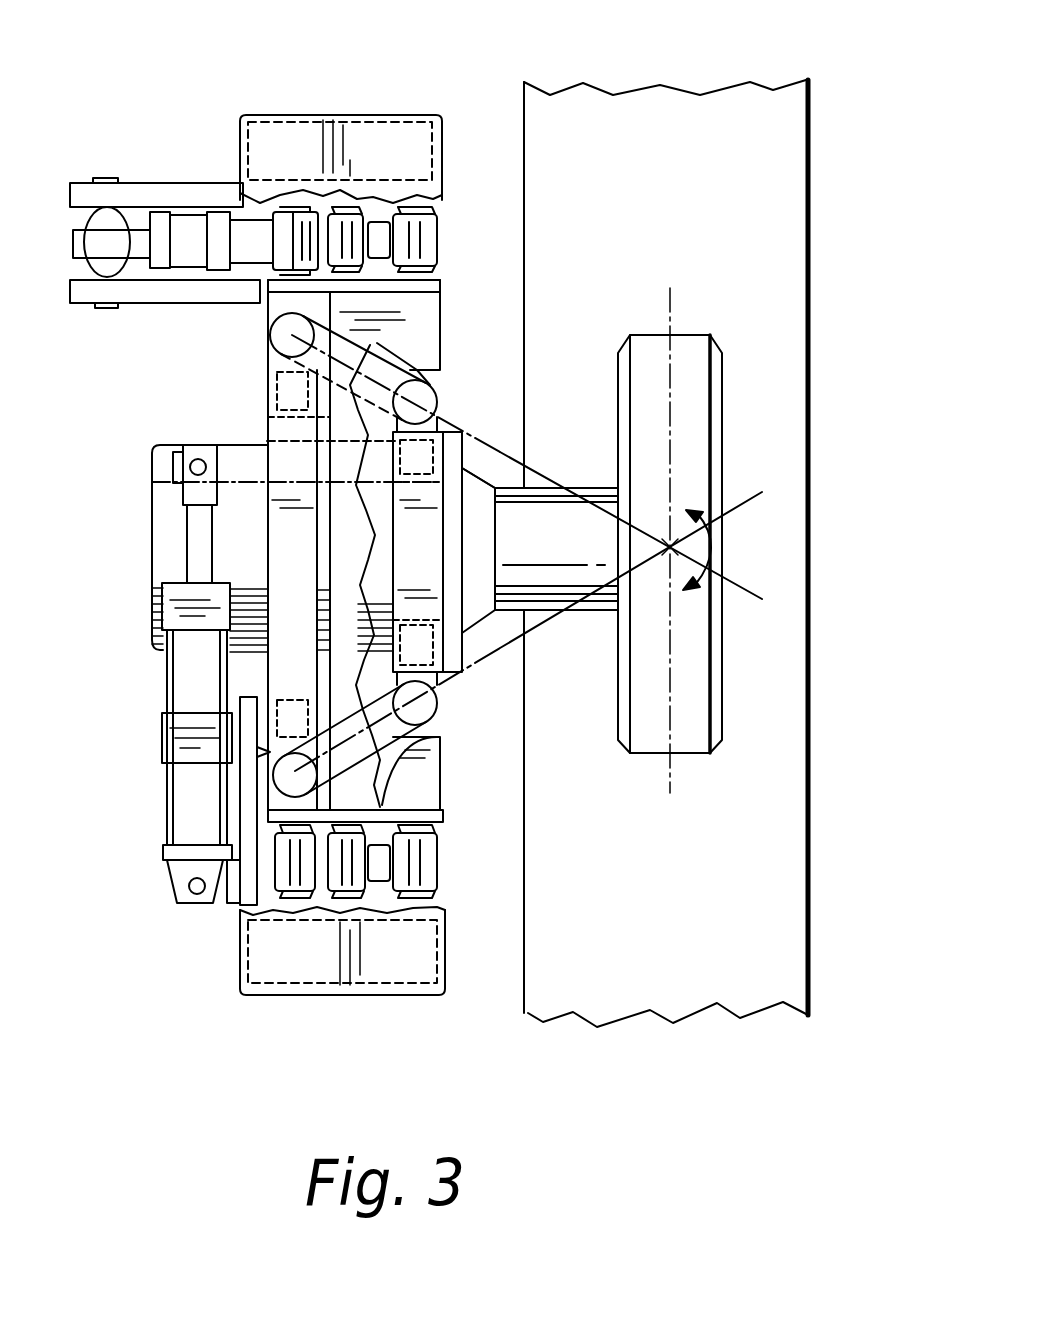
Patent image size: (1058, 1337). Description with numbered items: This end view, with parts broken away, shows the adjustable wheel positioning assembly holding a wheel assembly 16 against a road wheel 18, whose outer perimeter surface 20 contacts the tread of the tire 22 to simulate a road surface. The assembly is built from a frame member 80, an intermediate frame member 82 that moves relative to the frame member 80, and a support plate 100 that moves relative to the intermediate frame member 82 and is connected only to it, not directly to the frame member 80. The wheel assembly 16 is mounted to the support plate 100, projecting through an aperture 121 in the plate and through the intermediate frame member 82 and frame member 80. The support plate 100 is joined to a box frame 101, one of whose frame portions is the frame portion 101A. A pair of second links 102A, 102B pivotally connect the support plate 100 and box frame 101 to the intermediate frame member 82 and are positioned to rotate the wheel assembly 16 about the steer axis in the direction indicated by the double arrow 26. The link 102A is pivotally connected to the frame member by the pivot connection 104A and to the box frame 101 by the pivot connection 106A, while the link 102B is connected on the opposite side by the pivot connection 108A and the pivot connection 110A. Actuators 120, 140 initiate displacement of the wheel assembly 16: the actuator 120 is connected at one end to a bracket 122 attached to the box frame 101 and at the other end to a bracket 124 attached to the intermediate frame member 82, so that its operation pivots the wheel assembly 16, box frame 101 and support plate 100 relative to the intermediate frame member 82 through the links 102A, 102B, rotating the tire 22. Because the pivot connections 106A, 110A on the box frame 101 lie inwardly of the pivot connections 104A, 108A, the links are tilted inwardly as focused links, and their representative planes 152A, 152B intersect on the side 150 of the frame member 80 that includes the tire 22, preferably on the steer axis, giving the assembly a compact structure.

The wheel assembly 16 is at (140, 430).
The road wheel 18 is at (810, 400).
The outer perimeter surface 20 is at (682, 154).
The tire 22 is at (723, 377).
The double arrow 26 is at (723, 553).
The frame member 80 is at (253, 113).
The intermediate frame member 82 is at (443, 314).
The support plate 100 is at (462, 610).
The box frame 101 is at (388, 542).
The frame portion 101A is at (440, 530).
The second link 102A is at (405, 382).
The second link 102B is at (393, 743).
The pivot connection 104A is at (270, 332).
The pivot connection 106A is at (416, 400).
The pivot connection 108A is at (272, 797).
The pivot connection 110A is at (440, 712).
The actuator 120 is at (167, 681).
The aperture 121 is at (497, 549).
The bracket 122 is at (240, 445).
The bracket 124 is at (232, 905).
The actuator 140 is at (177, 235).
The side 150 is at (670, 60).
The representative plane 152A is at (490, 453).
The representative plane 152B is at (590, 612).